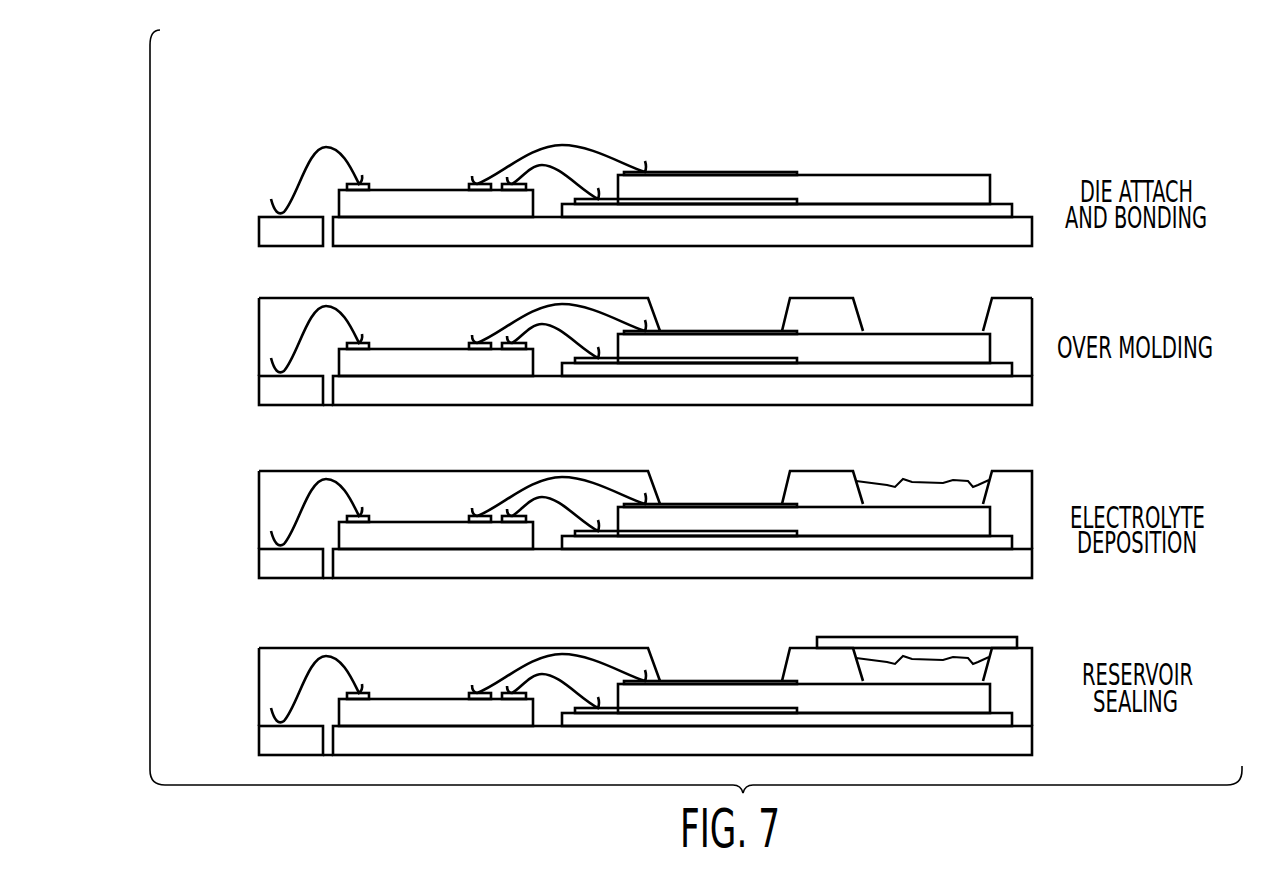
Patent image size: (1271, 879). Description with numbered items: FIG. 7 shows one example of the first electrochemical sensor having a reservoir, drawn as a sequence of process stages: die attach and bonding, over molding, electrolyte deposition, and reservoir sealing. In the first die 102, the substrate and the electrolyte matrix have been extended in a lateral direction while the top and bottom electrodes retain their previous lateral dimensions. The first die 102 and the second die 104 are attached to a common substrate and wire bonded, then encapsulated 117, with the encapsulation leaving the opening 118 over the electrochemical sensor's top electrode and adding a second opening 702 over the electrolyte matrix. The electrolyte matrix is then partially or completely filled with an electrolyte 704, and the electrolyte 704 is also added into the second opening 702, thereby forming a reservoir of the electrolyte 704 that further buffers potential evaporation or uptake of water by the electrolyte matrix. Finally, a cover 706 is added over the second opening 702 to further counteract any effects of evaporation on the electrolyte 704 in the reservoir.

The first die 102 is at (804, 127).
The second die 104 is at (442, 152).
The encapsulation 117 is at (273, 319).
The opening 118 is at (698, 300).
The second opening 702 is at (910, 305).
The electrolyte 704 is at (922, 495).
The cover 706 is at (925, 642).